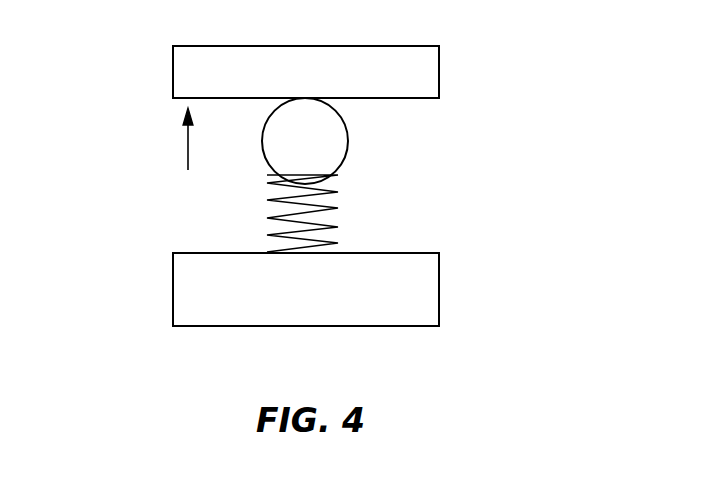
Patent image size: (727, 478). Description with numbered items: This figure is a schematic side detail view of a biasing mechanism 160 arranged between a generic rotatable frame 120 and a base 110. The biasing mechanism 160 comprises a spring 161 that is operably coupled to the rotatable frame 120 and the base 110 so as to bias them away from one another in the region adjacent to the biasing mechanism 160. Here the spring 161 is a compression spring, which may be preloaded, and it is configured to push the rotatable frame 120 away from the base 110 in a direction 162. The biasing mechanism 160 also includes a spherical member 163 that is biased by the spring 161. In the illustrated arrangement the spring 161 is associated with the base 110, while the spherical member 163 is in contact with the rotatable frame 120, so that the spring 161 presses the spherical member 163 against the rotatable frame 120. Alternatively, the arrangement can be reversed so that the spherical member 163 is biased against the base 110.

The base 110 is at (439, 290).
The rotatable frame 120 is at (439, 72).
The biasing mechanism 160 is at (152, 201).
The spring 161 is at (338, 213).
The direction 162 is at (188, 147).
The spherical member 163 is at (348, 145).